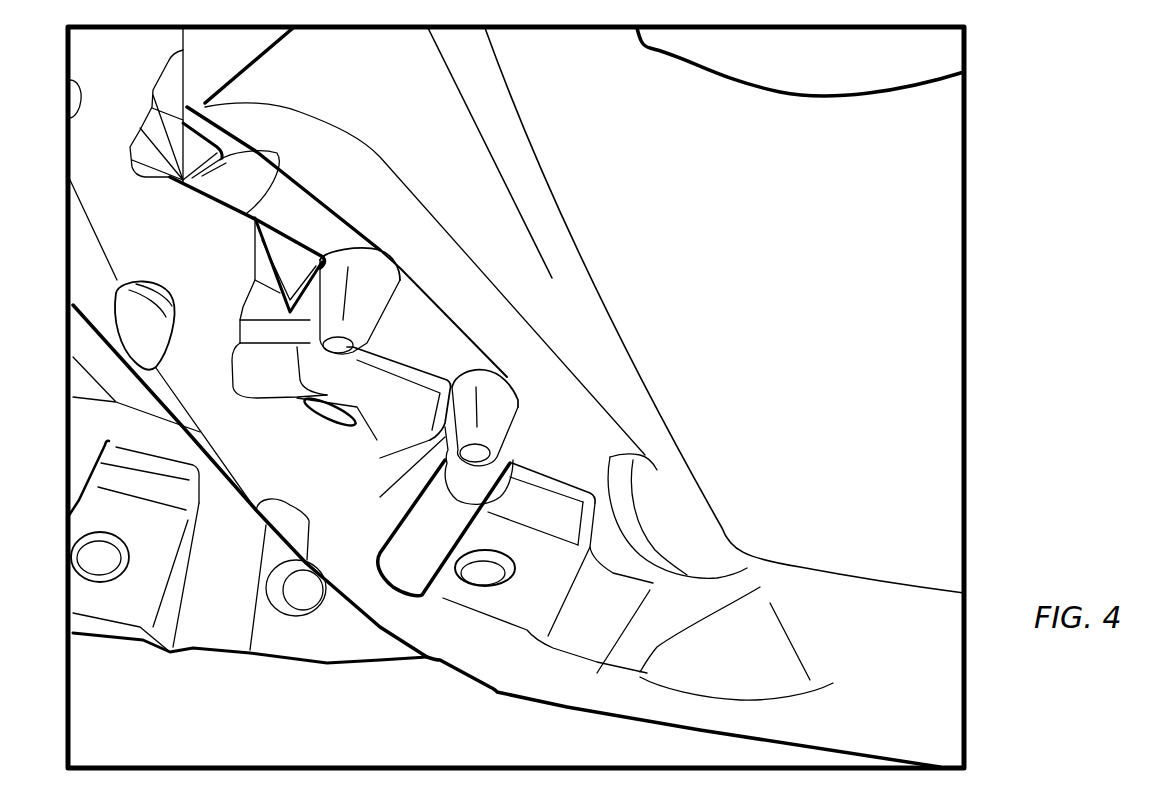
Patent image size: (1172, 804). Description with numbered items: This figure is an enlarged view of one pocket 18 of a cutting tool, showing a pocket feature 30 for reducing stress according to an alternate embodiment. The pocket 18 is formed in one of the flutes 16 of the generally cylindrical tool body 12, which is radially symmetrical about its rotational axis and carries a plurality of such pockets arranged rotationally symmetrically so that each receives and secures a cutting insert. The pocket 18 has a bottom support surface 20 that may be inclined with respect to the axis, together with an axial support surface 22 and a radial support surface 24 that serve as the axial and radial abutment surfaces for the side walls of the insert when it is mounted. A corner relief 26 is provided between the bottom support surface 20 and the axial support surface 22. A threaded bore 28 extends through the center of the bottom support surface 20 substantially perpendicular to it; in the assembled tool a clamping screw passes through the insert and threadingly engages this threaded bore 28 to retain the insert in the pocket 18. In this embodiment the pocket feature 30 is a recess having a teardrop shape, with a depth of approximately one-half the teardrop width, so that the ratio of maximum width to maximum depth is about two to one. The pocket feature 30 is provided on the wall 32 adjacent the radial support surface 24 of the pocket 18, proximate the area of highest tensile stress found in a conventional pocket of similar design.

The tool body 12 is at (798, 247).
The flute 16 is at (500, 267).
The pocket 18 is at (602, 547).
The bottom support surface 20 is at (548, 558).
The axial support surface 22 is at (415, 498).
The radial support surface 24 is at (545, 497).
The corner relief 26 is at (393, 573).
The threaded bore 28 is at (482, 576).
The pocket feature 30 is at (503, 377).
The wall 32 is at (533, 450).